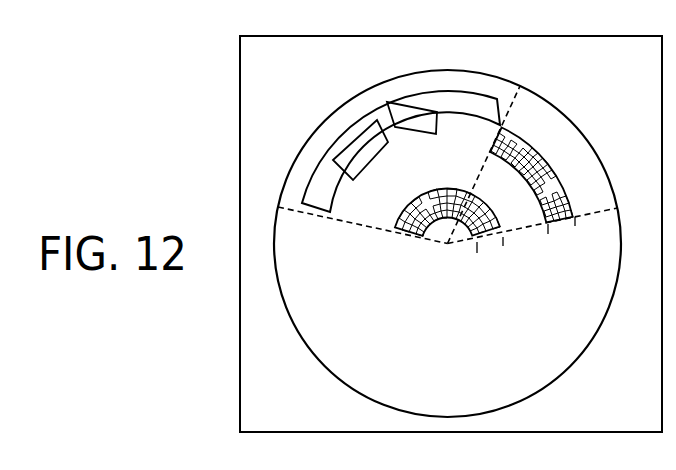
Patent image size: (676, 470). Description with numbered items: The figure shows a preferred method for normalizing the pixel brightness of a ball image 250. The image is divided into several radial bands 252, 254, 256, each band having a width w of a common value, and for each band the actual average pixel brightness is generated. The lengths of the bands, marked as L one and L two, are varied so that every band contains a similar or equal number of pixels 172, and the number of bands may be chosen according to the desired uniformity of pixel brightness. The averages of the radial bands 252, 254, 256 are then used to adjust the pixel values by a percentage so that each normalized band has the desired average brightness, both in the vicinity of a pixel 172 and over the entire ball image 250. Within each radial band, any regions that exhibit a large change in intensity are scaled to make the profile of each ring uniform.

The pixel 172 is at (403, 230).
The ball image 250 is at (500, 80).
The radial band 252 is at (527, 137).
The radial band 254 is at (462, 191).
The radial band 256 is at (409, 94).